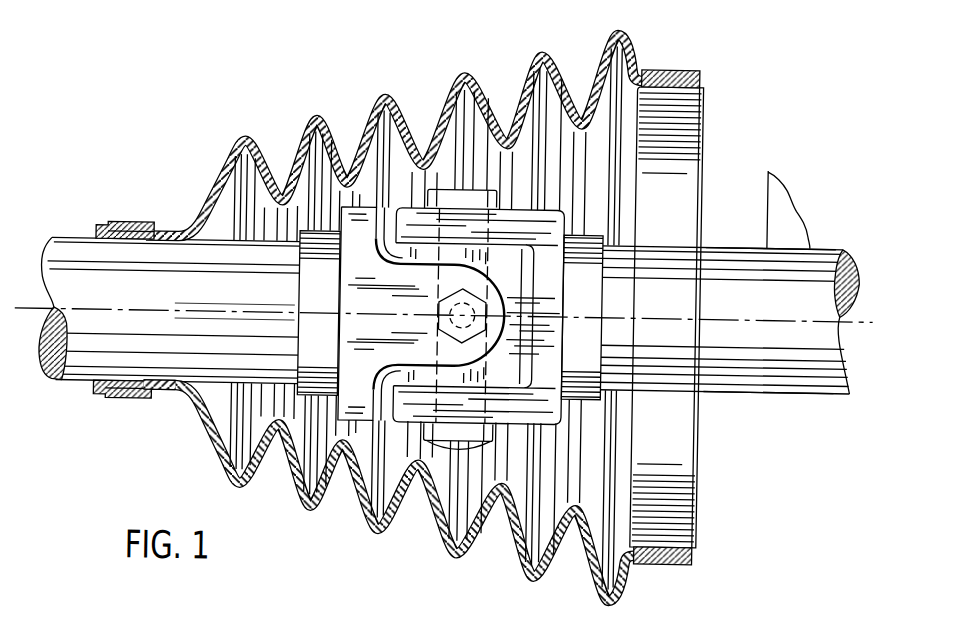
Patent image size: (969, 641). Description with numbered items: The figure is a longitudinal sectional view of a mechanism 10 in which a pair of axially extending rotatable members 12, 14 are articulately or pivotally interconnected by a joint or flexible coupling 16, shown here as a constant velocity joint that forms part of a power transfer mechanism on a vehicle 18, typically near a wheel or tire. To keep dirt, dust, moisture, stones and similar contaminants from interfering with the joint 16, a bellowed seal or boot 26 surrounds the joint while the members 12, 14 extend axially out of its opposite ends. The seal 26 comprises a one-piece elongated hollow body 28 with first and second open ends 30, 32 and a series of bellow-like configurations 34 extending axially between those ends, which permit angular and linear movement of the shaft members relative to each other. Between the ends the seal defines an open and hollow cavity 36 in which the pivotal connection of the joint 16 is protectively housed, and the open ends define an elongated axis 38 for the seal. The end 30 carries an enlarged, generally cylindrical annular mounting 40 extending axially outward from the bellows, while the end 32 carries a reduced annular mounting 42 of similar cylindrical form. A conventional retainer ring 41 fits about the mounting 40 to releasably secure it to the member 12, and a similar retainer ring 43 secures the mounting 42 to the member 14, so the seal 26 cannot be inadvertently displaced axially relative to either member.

The mechanism 10 is at (754, 114).
The rotatable member 12 is at (780, 386).
The rotatable member 14 is at (71, 395).
The joint or flexible coupling 16 is at (367, 296).
The vehicle 18 is at (803, 178).
The bellowed seal or boot 26 is at (327, 95).
The one-piece elongated hollow body 28 is at (407, 105).
The first open end 30 is at (656, 57).
The second open end 32 is at (132, 218).
The bellow-like configurations 34 is at (604, 32).
The open and hollow cavity 36 is at (310, 180).
The elongated axis 38 is at (185, 307).
The enlarged annular mounting 40 is at (633, 549).
The retainer apparatus or ring 41 is at (696, 58).
The reduced annular mounting 42 is at (179, 386).
The retainer apparatus or ring 43 is at (122, 396).